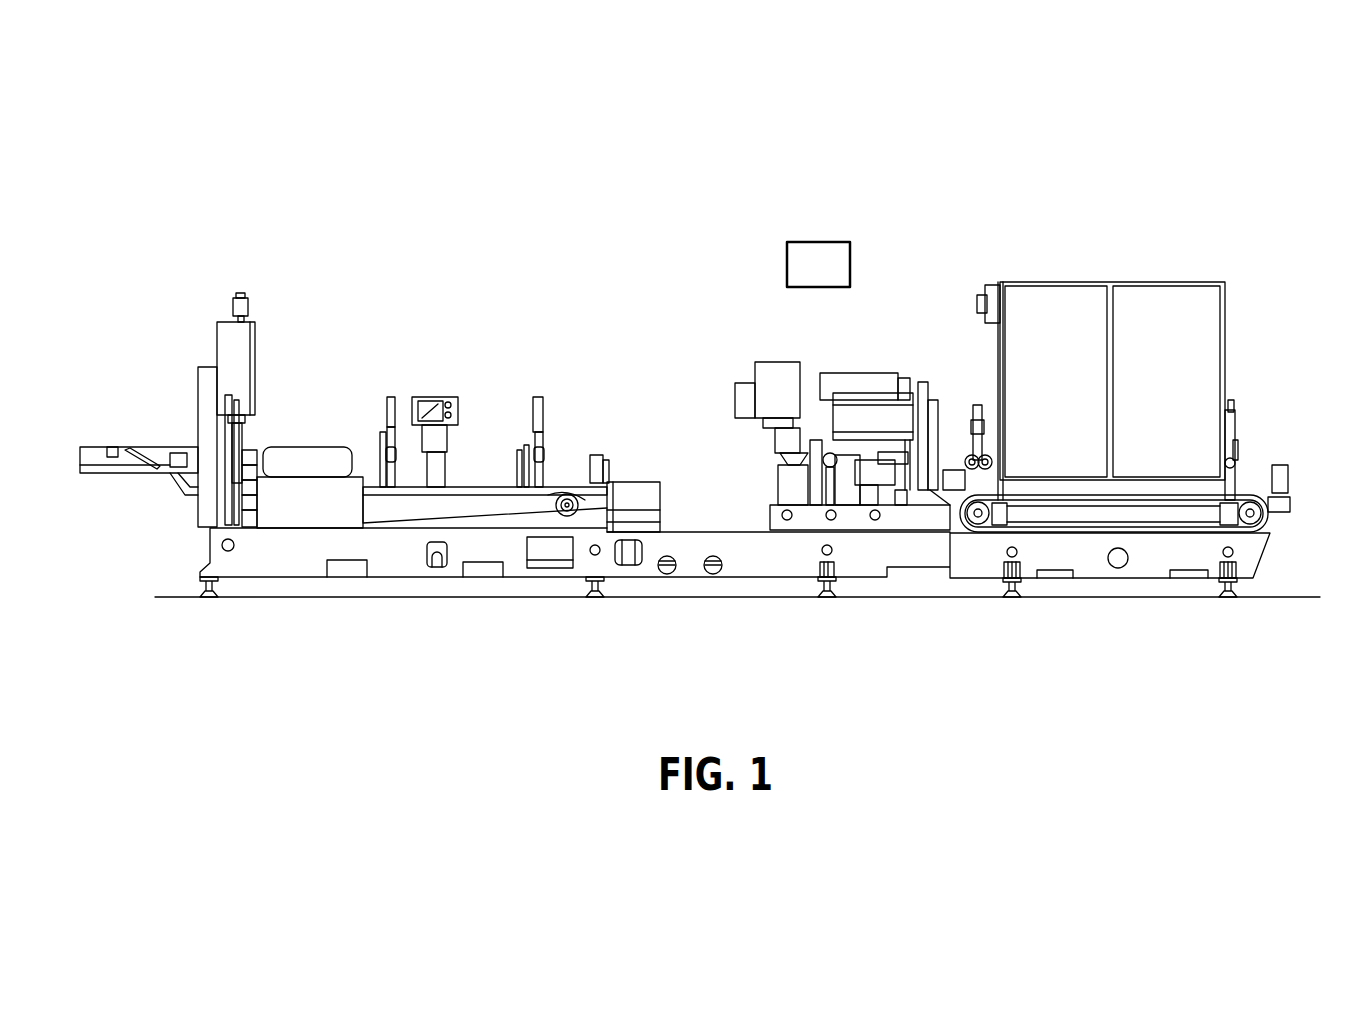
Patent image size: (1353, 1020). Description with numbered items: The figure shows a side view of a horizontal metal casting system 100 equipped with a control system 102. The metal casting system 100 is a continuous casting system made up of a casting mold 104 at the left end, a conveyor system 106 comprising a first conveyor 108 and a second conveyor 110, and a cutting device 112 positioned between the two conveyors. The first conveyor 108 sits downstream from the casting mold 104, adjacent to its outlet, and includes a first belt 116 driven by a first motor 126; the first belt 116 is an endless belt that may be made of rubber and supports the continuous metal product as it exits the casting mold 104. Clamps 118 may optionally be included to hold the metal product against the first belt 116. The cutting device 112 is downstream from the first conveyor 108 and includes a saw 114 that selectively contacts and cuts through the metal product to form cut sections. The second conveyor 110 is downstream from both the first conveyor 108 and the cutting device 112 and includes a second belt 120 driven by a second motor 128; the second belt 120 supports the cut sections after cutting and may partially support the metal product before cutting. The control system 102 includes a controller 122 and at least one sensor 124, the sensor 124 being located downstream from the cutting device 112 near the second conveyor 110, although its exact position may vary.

The metal casting system 100 is at (310, 150).
The control system 102 is at (838, 174).
The casting mold 104 is at (252, 453).
The conveyor system 106 is at (645, 212).
The first conveyor 108 is at (488, 487).
The second conveyor 110 is at (1073, 520).
The cutting device 112 is at (850, 403).
The saw 114 is at (920, 417).
The first belt 116 is at (460, 488).
The clamps 118 is at (387, 397).
The second belt 120 is at (1143, 497).
The controller 122 is at (835, 276).
The sensor 124 is at (950, 486).
The first motor 126 is at (600, 455).
The second motor 128 is at (1280, 465).